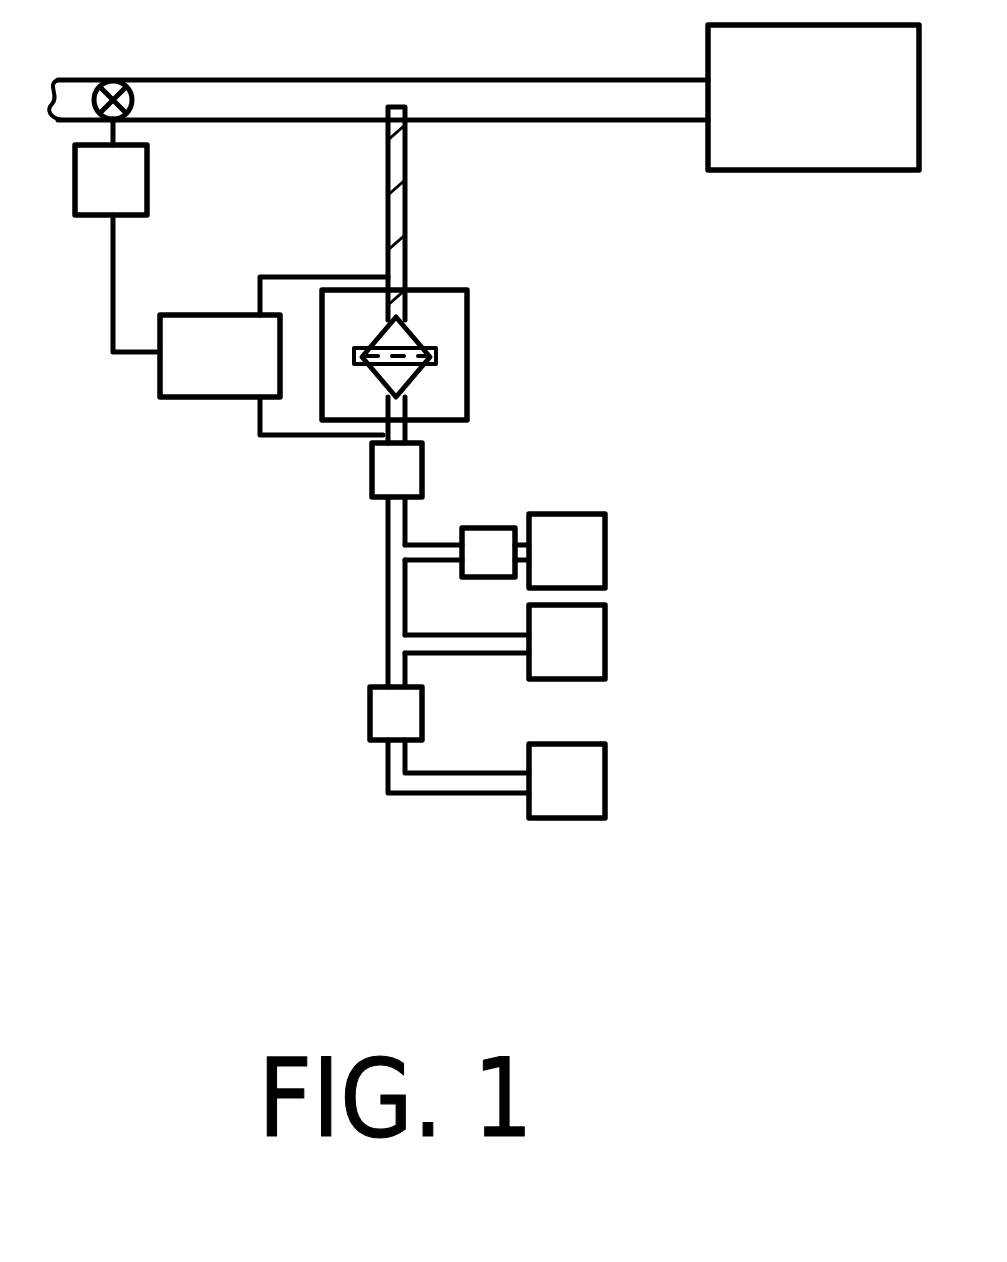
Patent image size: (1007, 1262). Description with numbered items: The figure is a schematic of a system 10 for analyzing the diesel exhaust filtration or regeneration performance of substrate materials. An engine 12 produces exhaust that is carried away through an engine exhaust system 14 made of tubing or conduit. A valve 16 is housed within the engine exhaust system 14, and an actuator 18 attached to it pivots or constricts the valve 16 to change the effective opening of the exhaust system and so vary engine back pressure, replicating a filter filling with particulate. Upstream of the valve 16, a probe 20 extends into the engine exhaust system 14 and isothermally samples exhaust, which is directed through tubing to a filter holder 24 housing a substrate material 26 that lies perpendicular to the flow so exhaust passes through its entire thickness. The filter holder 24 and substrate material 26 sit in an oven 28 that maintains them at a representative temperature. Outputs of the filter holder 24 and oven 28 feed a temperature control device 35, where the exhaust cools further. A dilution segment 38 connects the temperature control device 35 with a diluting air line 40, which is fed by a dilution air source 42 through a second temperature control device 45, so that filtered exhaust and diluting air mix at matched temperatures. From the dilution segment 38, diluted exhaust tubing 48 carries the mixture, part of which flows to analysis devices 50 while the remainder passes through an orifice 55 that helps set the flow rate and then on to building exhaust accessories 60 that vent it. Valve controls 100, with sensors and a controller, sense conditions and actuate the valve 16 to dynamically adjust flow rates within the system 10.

The system 10 is at (223, 482).
The engine 12 is at (847, 109).
The engine exhaust system 14 is at (420, 100).
The valve 16 is at (113, 80).
The actuator 18 is at (140, 202).
The probe 20 is at (388, 190).
The filter holder 24 is at (413, 330).
The substrate material 26 is at (437, 361).
The oven 28 is at (467, 405).
The temperature control device 35 is at (380, 470).
The dilution segment 38 is at (396, 555).
The diluting air line 40 is at (425, 550).
The dilution air source 42 is at (594, 573).
The second temperature control device 45 is at (487, 548).
The diluted exhaust tubing 48 is at (395, 600).
The analysis devices 50 is at (594, 664).
The orifice 55 is at (390, 705).
The building exhaust accessories 60 is at (594, 803).
The valve controls 100 is at (262, 373).